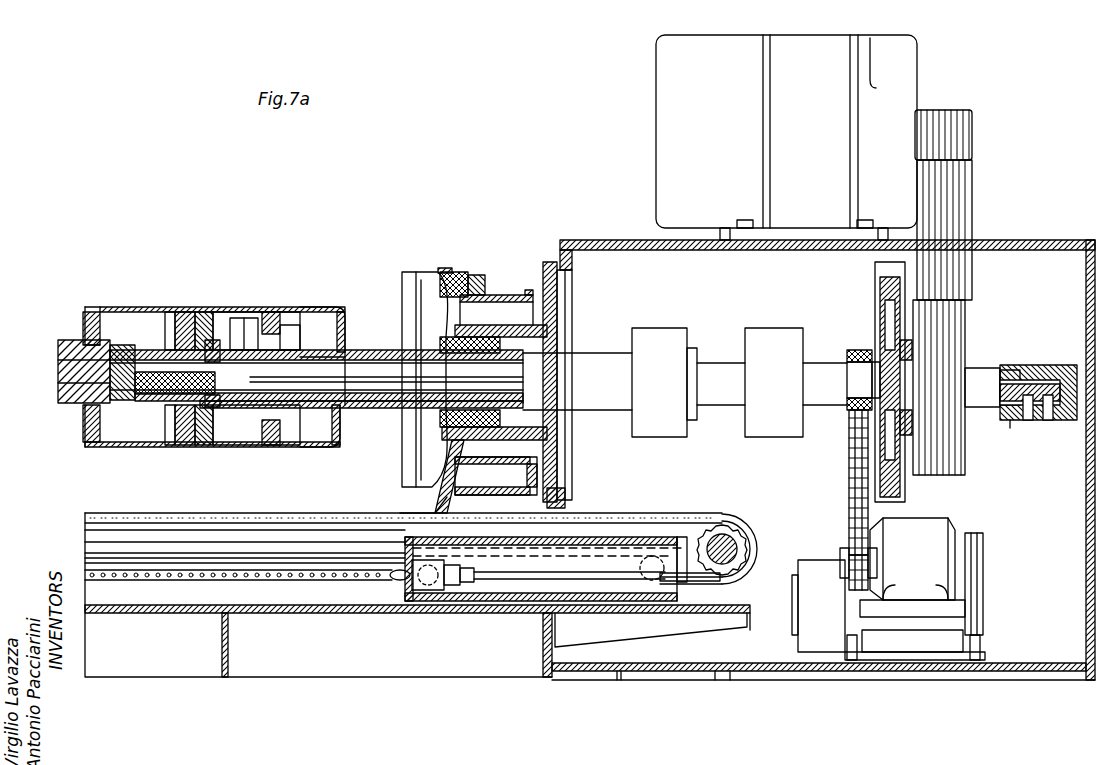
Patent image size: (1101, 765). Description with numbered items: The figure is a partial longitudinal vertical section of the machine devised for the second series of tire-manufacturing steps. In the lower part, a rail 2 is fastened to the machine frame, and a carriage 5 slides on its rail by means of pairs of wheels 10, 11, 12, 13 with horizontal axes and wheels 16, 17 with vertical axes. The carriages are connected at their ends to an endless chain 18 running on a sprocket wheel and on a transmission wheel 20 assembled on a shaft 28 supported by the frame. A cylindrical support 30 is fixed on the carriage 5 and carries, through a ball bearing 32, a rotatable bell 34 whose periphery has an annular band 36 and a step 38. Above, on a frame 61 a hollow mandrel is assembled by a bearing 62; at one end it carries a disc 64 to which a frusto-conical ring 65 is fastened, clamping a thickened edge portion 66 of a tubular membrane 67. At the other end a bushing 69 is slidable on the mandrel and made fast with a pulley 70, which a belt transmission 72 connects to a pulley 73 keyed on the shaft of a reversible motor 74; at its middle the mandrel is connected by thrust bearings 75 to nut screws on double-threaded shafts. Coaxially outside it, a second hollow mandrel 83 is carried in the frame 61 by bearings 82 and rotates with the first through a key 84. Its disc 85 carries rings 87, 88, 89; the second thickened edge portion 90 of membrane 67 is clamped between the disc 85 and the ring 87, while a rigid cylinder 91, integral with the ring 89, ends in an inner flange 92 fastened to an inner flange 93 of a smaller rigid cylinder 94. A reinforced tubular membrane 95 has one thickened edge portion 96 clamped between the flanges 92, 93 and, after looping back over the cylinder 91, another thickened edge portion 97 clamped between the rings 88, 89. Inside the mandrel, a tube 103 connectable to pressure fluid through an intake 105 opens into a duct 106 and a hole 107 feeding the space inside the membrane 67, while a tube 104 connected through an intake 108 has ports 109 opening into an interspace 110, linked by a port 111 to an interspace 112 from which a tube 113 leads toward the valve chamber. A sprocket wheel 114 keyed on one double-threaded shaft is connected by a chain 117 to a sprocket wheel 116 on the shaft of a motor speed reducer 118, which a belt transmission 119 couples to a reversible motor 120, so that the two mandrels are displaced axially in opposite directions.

The rail 2 is at (153, 543).
The carriage 5 is at (510, 487).
The wheel 10 is at (420, 520).
The wheel 11 is at (423, 590).
The wheel 12 is at (672, 517).
The wheel 13 is at (640, 598).
The wheel 16 is at (483, 568).
The wheel 17 is at (598, 560).
The endless chain 18 is at (282, 582).
The transmission wheel 20 is at (722, 525).
The shaft 28 is at (733, 540).
The cylindrical support 30 is at (500, 295).
The ball bearing 32 is at (475, 275).
The bell 34 is at (443, 272).
The annular band 36 is at (405, 272).
The step 38 is at (418, 268).
The frame 61 is at (1035, 242).
The bearing 62 is at (890, 360).
The disc 64 is at (92, 312).
The ring 65 is at (78, 428).
The thickened edge portion 66 is at (82, 307).
The tubular membrane 67 is at (123, 307).
The bushing 69 is at (968, 365).
The pulley 70 is at (968, 308).
The belt transmission 72 is at (972, 187).
The pulley 73 is at (972, 118).
The reversible motor 74 is at (805, 45).
The thrust bearing 75 is at (768, 336).
The bearing 82 is at (503, 418).
The second hollow mandrel 83 is at (360, 402).
The key 84 is at (372, 357).
The disc 85 is at (180, 312).
The ring 87 is at (175, 425).
The ring 88 is at (190, 447).
The ring 89 is at (203, 447).
The second thickened edge portion 90 is at (200, 312).
The rigid cylinder 91 is at (240, 447).
The inner flange 92 is at (275, 312).
The inner flange 93 is at (282, 424).
The rigid cylinder 94 is at (334, 320).
The tubular membrane 95 is at (313, 307).
The thickened edge portion 96 is at (277, 447).
The thickened edge portion 97 is at (208, 320).
The tube 103 is at (527, 378).
The tube 104 is at (527, 391).
The intake 105 is at (1047, 420).
The duct 106 is at (60, 371).
The hole 107 is at (115, 358).
The intake 108 is at (1025, 420).
The port 109 is at (205, 395).
The interspace 110 is at (268, 357).
The port 111 is at (318, 375).
The interspace 112 is at (418, 350).
The tube 113 is at (242, 312).
The sprocket wheel 114 is at (853, 352).
The sprocket wheel 116 is at (849, 543).
The chain 117 is at (850, 458).
The motor speed reducer 118 is at (920, 517).
The belt transmission 119 is at (982, 566).
The reversible motor 120 is at (800, 632).